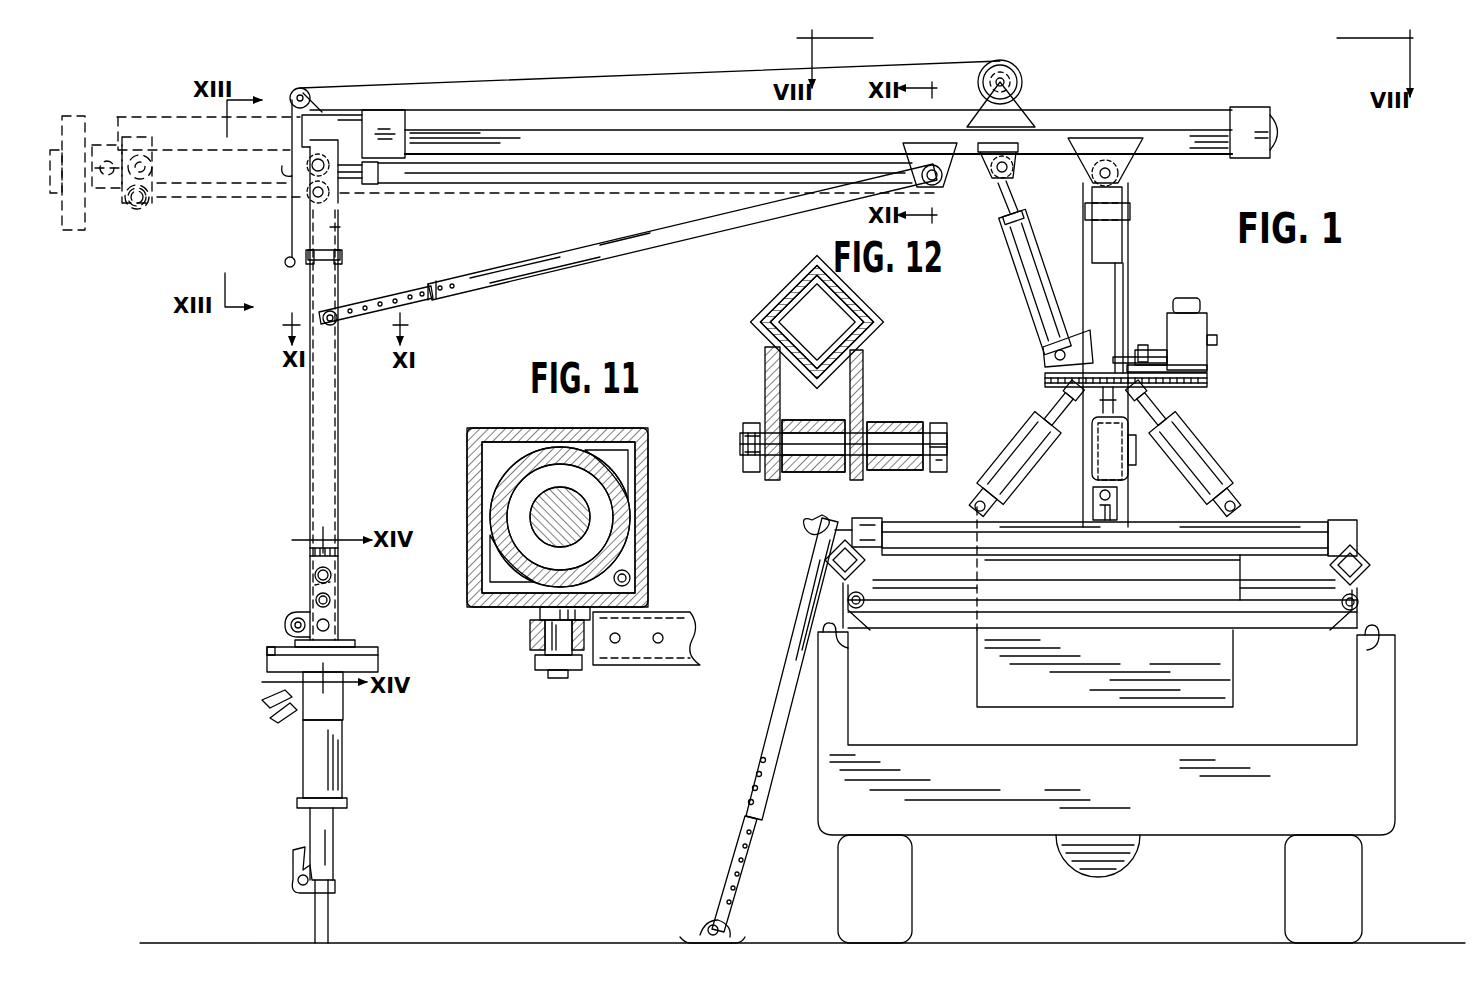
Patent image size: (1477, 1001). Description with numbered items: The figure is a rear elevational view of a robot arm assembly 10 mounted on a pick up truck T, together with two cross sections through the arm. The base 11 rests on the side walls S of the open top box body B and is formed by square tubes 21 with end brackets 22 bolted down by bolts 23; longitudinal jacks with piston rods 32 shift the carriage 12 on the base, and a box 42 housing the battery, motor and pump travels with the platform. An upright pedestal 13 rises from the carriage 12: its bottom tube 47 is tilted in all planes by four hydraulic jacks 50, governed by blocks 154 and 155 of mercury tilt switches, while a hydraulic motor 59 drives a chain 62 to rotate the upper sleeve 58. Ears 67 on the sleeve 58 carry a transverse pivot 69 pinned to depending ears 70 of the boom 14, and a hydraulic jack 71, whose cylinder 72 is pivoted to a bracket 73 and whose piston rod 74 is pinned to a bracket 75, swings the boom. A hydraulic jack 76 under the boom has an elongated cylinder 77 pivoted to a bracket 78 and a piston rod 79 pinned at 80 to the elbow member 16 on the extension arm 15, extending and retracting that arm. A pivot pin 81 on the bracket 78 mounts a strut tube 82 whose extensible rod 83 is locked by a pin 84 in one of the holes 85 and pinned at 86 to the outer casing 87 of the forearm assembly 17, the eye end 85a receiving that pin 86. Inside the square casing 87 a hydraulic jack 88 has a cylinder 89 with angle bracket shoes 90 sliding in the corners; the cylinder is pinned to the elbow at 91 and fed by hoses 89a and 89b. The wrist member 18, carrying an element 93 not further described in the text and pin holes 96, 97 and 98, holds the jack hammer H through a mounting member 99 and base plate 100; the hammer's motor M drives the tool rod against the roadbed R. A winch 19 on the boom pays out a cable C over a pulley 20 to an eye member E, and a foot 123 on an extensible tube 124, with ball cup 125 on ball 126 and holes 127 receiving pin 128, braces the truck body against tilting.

In FIG. 1, the robot arm assembly 10 is at (1285, 147).
In FIG. 1, the base 11 is at (1373, 557).
In FIG. 1, the carriage 12 is at (1150, 524).
In FIG. 1, the pedestal 13 is at (1132, 305).
In FIG. 1, the boom 14 is at (1090, 127).
In FIG. 12, the boom 14 is at (777, 295).
In FIG. 1, the extension arm 15 is at (354, 108).
In FIG. 12, the extension arm 15 is at (767, 340).
In FIG. 1, the elbow member 16 is at (315, 184).
In FIG. 1, the forearm assembly 17 is at (341, 402).
In FIG. 11, the forearm assembly 17 is at (462, 442).
In FIG. 1, the wrist member 18 is at (334, 613).
In FIG. 1, the winch 19 is at (1020, 80).
In FIG. 1, the pulley 20 is at (307, 94).
In FIG. 1, the square tubes 21 is at (830, 566).
In FIG. 1, the brackets 22 is at (848, 608).
In FIG. 1, the bolts 23 is at (828, 624).
In FIG. 1, the piston rods 32 is at (863, 612).
In FIG. 1, the box 42 is at (1203, 712).
In FIG. 1, the bottom tube 47 is at (1090, 455).
In FIG. 1, the hydraulic jacks 50 is at (1005, 452).
In FIG. 1, the upper sleeve 58 is at (1124, 274).
In FIG. 1, the hydraulic motor 59 is at (1207, 323).
In FIG. 1, the chain 62 is at (1207, 381).
In FIG. 1, the ears 67 is at (1118, 195).
In FIG. 1, the transverse pivot 69 is at (1093, 178).
In FIG. 1, the depending ears 70 is at (1131, 165).
In FIG. 1, the hydraulic jack 71 is at (1012, 262).
In FIG. 1, the cylinder 72 is at (1043, 320).
In FIG. 1, the bracket 73 is at (1088, 347).
In FIG. 1, the piston rod 74 is at (1005, 205).
In FIG. 1, the bracket 75 is at (1016, 165).
In FIG. 1, the hydraulic jack 76 is at (575, 168).
In FIG. 12, the hydraulic jack 76 is at (803, 473).
In FIG. 1, the cylinder 77 is at (642, 177).
In FIG. 12, the cylinder 77 is at (788, 430).
In FIG. 1, the bracket 78 is at (927, 147).
In FIG. 12, the bracket 78 is at (853, 383).
In FIG. 1, the piston rod 79 is at (348, 173).
In FIG. 1, the pin 80 is at (290, 168).
In FIG. 1, the pivot pin 81 is at (940, 180).
In FIG. 12, the pivot pin 81 is at (905, 443).
In FIG. 1, the strut tube 82 is at (617, 258).
In FIG. 12, the strut tube 82 is at (882, 418).
In FIG. 1, the extensible rod 83 is at (410, 307).
In FIG. 1, the pin 84 is at (434, 287).
In FIG. 1, the holes 85 is at (370, 303).
In FIG. 11, the holes 85 is at (642, 663).
In FIG. 11, the eye end 85a is at (533, 632).
In FIG. 1, the pin 86 is at (321, 319).
In FIG. 11, the pin 86 is at (558, 642).
In FIG. 1, the outer casing 87 is at (320, 417).
In FIG. 11, the outer casing 87 is at (475, 498).
In FIG. 11, the hydraulic jack 88 is at (525, 470).
In FIG. 1, the cylinder 89 is at (333, 242).
In FIG. 11, the cylinder 89 is at (628, 505).
In FIG. 11, the fluid conveying hose 89a is at (633, 578).
In FIG. 1, the fluid hose 89b is at (352, 223).
In FIG. 11, the angle bracket shoes 90 is at (630, 455).
In FIG. 1, the pin 91 is at (140, 207).
In FIG. 1, the pin 93 is at (333, 577).
In FIG. 1, the top pin holes 96 is at (320, 597).
In FIG. 1, the bottom pin holes 97 is at (331, 626).
In FIG. 1, the pin holes 98 is at (292, 622).
In FIG. 1, the mounting member 99 is at (380, 652).
In FIG. 1, the base plate 100 is at (267, 650).
In FIG. 1, the foot 123 is at (688, 940).
In FIG. 1, the extensible tube 124 is at (752, 742).
In FIG. 1, the ball cup 125 is at (823, 518).
In FIG. 1, the ball 126 is at (853, 520).
In FIG. 1, the holes 127 is at (735, 828).
In FIG. 1, the pin 128 is at (747, 807).
In FIG. 1, the block of mercury tilt switches 154 is at (1131, 460).
In FIG. 1, the block of mercury tilt switches 155 is at (1050, 486).
In FIG. 1, the box body B is at (1372, 670).
In FIG. 1, the cable C is at (570, 78).
In FIG. 1, the eye member E is at (286, 264).
In FIG. 1, the jack hammer H is at (82, 122).
In FIG. 1, the motor M is at (303, 700).
In FIG. 1, the roadbed R is at (1437, 945).
In FIG. 1, the side walls S is at (833, 633).
In FIG. 1, the pick up truck T is at (1398, 693).